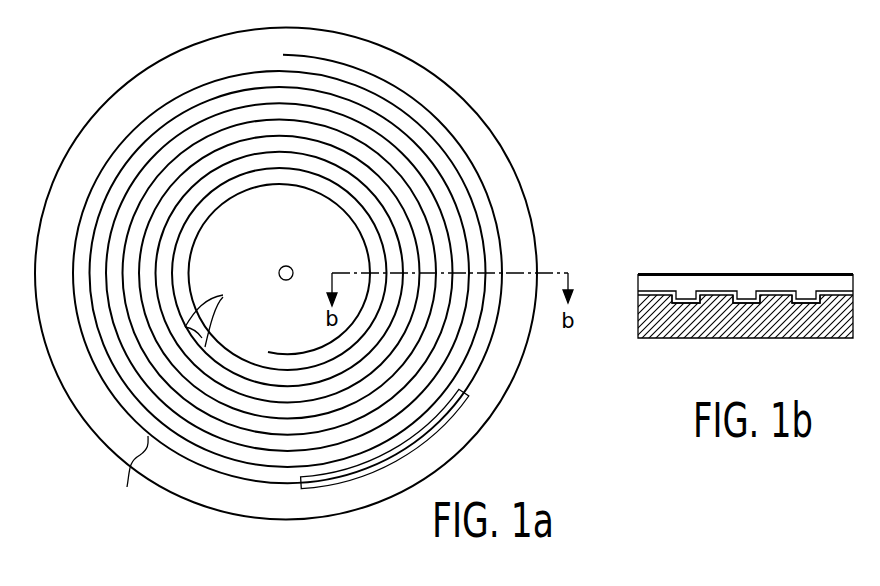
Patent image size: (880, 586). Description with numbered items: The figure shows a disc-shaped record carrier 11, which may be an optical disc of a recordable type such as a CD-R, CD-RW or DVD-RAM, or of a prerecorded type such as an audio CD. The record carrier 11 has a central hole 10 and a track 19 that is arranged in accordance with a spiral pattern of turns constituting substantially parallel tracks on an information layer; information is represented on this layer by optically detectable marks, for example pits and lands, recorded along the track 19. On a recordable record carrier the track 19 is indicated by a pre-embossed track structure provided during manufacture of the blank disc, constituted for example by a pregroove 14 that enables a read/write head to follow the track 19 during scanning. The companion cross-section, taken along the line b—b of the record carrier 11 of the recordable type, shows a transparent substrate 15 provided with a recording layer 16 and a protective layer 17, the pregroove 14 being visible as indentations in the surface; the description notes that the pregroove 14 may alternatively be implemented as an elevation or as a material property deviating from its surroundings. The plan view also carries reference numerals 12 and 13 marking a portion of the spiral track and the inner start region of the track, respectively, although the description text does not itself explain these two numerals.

In FIG. 1a, the central hole 10 is at (285, 267).
In FIG. 1a, the record carrier 11 is at (503, 93).
In FIG. 1b, the record carrier 11 is at (623, 247).
In FIG. 1a, the track portion 12 is at (306, 492).
In FIG. 1a, the groove start region 13 is at (215, 314).
In FIG. 1b, the pregroove 14 is at (745, 305).
In FIG. 1b, the transparent substrate 15 is at (660, 333).
In FIG. 1b, the recording layer 16 is at (783, 292).
In FIG. 1b, the protective layer 17 is at (740, 282).
In FIG. 1a, the track 19 is at (134, 476).